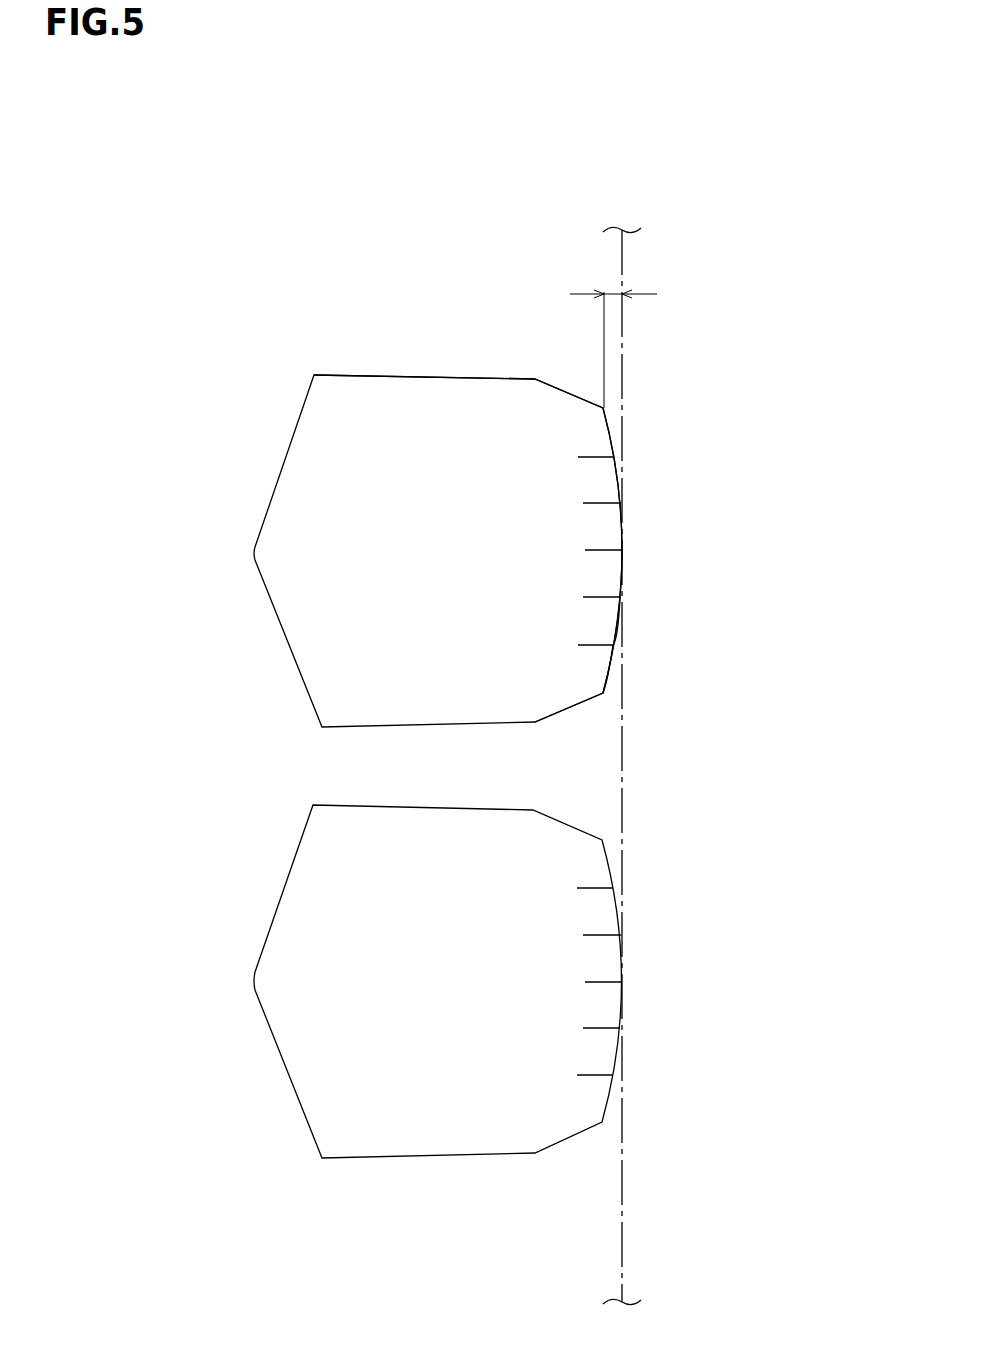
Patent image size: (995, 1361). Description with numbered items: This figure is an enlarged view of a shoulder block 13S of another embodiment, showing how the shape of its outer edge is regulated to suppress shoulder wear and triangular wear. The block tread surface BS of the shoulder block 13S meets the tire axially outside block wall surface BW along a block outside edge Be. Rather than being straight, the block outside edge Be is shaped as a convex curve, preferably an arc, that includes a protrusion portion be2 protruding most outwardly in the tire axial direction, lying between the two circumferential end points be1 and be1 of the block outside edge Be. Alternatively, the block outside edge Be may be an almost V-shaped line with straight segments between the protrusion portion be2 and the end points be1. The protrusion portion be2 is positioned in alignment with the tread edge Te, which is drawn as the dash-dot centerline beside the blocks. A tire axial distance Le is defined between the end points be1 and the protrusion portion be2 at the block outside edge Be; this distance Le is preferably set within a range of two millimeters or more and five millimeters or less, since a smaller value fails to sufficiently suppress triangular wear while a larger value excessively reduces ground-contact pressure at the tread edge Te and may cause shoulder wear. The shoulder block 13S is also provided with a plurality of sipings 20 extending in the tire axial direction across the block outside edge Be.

The shoulder block 13S is at (458, 569).
The block tread surface BS is at (388, 432).
The sipings 20 is at (600, 597).
The end point be1 is at (603, 405).
The protrusion portion be2 is at (625, 550).
The block outside edge Be is at (620, 617).
The tire axially outside block wall surface BW is at (613, 653).
The tire axial distance Le is at (613, 281).
The tread edge Te is at (622, 403).